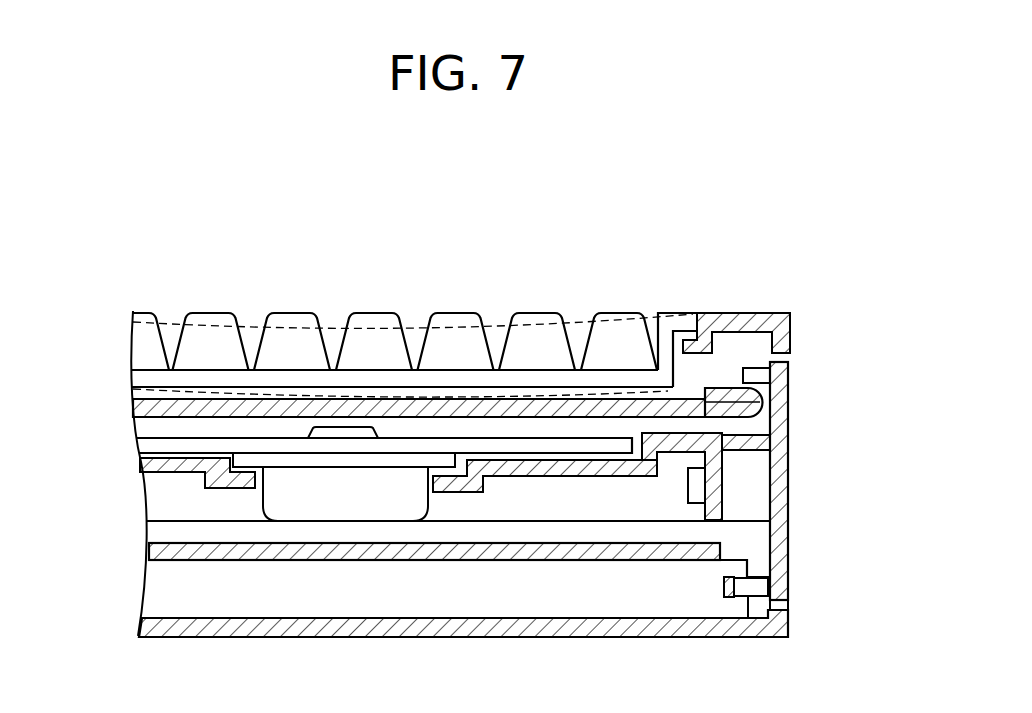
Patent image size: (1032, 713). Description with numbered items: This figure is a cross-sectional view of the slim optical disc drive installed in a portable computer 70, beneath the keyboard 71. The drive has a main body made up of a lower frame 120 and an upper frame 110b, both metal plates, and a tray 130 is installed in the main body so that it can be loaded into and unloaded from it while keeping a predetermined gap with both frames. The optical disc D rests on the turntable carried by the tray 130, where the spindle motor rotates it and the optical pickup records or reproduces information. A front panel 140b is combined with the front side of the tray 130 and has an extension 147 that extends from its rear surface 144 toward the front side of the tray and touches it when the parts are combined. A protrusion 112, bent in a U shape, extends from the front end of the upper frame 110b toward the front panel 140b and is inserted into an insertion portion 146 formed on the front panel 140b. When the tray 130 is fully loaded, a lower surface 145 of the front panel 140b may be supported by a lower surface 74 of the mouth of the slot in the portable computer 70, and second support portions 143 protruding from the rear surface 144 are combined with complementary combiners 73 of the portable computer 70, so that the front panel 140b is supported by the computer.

The portable computer 70 is at (716, 300).
The keyboard 71 is at (453, 311).
The protrusion 112 is at (717, 388).
The upper frame 110b is at (135, 402).
The optical disc D is at (137, 457).
The tray 130 is at (162, 481).
The lower frame 120 is at (158, 553).
The front panel 140b is at (789, 487).
The insertion portion 146 is at (791, 383).
The extension 147 is at (746, 455).
The rear surface 144 is at (787, 530).
The lower surface 145 is at (789, 608).
The lower surface of the mouth of the slot 74 is at (789, 615).
The combiner 73 is at (726, 588).
The second support portion 143 is at (743, 586).